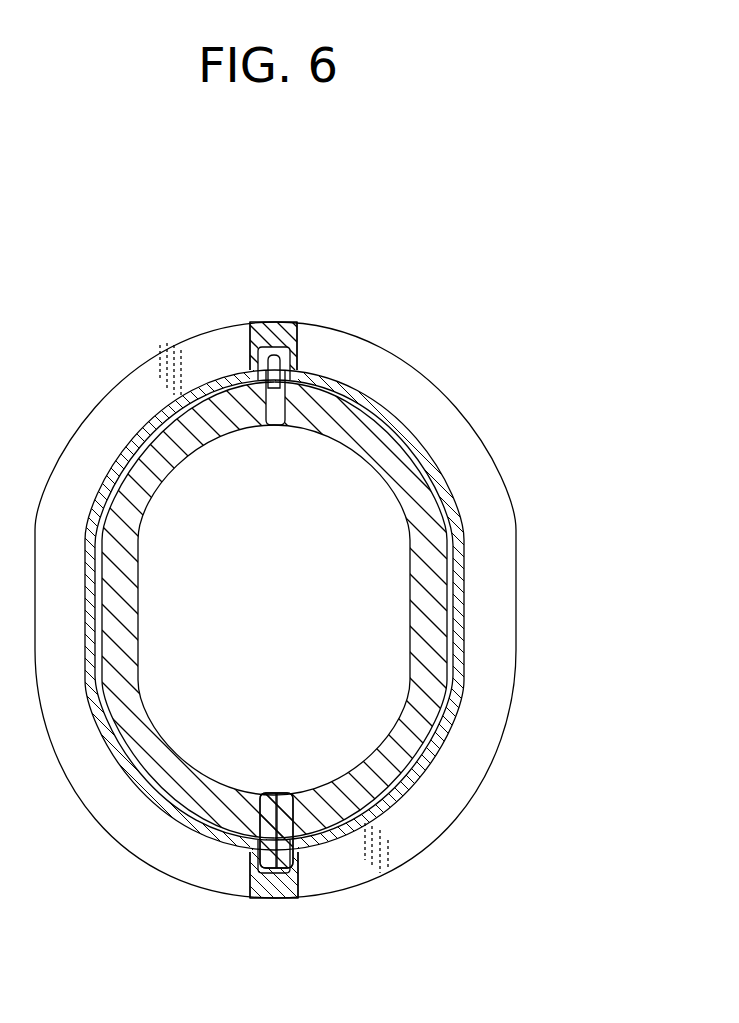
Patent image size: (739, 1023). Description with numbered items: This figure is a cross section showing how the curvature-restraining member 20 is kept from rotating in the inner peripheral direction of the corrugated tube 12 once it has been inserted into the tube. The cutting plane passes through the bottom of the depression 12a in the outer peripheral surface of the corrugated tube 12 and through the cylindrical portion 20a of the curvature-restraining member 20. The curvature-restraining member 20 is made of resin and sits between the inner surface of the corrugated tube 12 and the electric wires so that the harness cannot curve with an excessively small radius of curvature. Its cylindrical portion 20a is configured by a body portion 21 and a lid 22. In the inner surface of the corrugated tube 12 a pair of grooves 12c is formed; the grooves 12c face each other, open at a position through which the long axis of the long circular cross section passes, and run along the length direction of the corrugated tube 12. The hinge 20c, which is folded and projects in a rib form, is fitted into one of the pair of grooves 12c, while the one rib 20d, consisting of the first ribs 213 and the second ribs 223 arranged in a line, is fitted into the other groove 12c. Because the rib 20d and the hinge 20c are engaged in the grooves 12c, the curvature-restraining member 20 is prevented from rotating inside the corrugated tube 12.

The corrugated tube 12 is at (299, 611).
The depression 12a is at (413, 432).
The groove 12c is at (298, 348).
The curvature-restraining member 20 is at (362, 603).
The cylindrical portion 20a is at (450, 595).
The hinge 20c is at (252, 322).
The rib 20d is at (276, 741).
The body portion 21 is at (410, 601).
The lid 22 is at (139, 601).
The first ribs 213 is at (308, 888).
The second ribs 223 is at (268, 830).